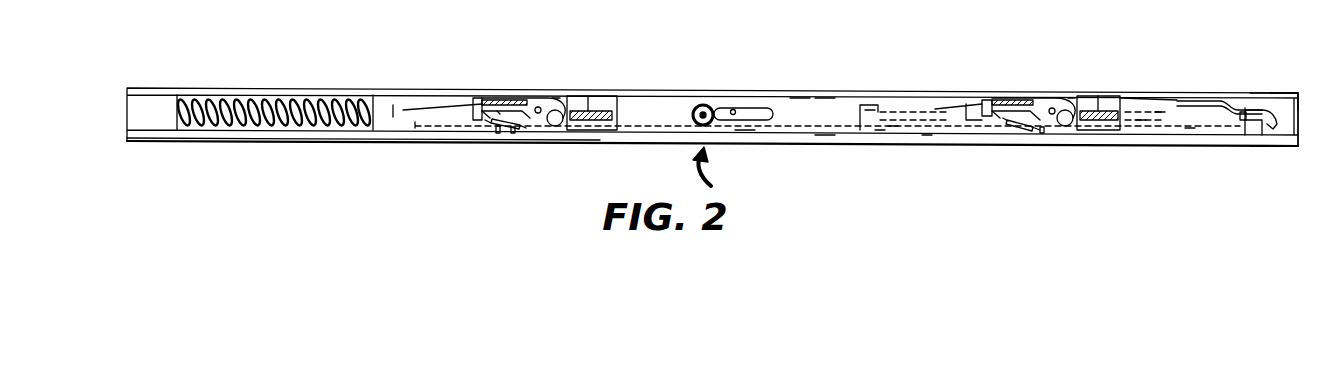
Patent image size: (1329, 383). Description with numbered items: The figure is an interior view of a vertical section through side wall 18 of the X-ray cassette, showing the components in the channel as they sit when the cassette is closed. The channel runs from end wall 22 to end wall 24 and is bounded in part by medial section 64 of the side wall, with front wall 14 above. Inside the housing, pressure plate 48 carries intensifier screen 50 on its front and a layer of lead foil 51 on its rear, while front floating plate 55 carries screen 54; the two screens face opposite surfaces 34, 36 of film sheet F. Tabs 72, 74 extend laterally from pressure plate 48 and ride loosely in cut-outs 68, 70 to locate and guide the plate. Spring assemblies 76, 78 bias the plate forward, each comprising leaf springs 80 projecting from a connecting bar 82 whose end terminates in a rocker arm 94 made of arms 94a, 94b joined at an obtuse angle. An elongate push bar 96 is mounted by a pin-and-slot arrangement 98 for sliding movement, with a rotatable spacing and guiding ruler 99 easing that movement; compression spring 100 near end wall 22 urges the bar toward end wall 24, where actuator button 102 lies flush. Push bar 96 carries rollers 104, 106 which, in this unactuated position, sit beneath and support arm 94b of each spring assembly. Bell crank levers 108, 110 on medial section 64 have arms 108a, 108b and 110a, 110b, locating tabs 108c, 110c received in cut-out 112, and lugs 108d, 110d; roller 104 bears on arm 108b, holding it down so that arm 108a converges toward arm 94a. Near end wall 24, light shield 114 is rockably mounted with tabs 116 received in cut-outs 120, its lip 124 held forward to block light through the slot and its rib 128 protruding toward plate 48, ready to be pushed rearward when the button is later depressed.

The front wall 14 is at (278, 141).
The side wall 18 is at (714, 172).
The end wall 22 is at (128, 90).
The end wall 24 is at (1303, 136).
The surface of film sheet 34 is at (927, 132).
The surface of film sheet 36 is at (918, 115).
The pressure plate 48 is at (870, 110).
The intensifier screen 50 is at (1188, 128).
The layer of lead foil 51 is at (893, 126).
The screen 54 is at (823, 130).
The front floating plate 55 is at (826, 131).
The medial section 64 is at (742, 130).
The cut-out 68 is at (1121, 104).
The cut-out 70 is at (608, 96).
The tab 72 is at (1095, 96).
The tab 74 is at (595, 110).
The spring assembly 76 is at (1003, 99).
The spring assembly 78 is at (480, 99).
The leaf springs 80 is at (403, 109).
The connecting bar 82 is at (506, 100).
The rocker arm 94 is at (537, 98).
The arm 94a is at (490, 118).
The arm 94b is at (552, 98).
The push bar 96 is at (799, 105).
The pin-and-slot arrangement 98 is at (732, 109).
The spacing and guiding ruler 99 is at (705, 104).
The compression spring 100 is at (190, 98).
The actuator button 102 is at (1258, 128).
The roller 104 is at (1078, 128).
The roller 106 is at (557, 127).
The bell crank lever 108 is at (1063, 128).
The arm 108a is at (1018, 129).
The arm 108b is at (1097, 131).
The tab 108c is at (1037, 132).
The lug 108d is at (1008, 121).
The bell crank lever 110 is at (512, 129).
The arm 110a is at (498, 133).
The arm 110b is at (582, 130).
The tab 110c is at (523, 128).
The lug 110d is at (497, 112).
The cut-out 112 is at (491, 123).
The light shield 114 is at (1255, 103).
The tab 116 is at (1187, 103).
The cut-out 120 is at (1200, 112).
The lip 124 is at (1296, 96).
The rib 128 is at (1233, 116).
The film sheet F is at (880, 130).